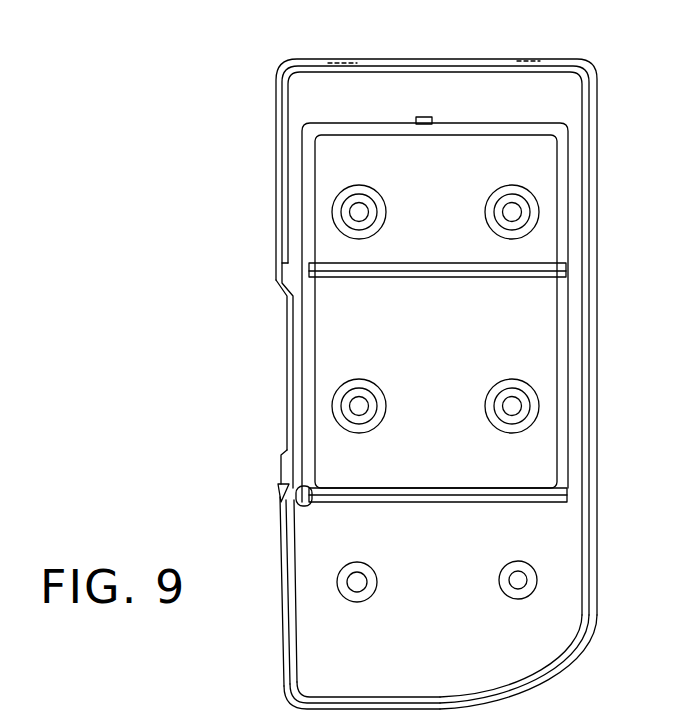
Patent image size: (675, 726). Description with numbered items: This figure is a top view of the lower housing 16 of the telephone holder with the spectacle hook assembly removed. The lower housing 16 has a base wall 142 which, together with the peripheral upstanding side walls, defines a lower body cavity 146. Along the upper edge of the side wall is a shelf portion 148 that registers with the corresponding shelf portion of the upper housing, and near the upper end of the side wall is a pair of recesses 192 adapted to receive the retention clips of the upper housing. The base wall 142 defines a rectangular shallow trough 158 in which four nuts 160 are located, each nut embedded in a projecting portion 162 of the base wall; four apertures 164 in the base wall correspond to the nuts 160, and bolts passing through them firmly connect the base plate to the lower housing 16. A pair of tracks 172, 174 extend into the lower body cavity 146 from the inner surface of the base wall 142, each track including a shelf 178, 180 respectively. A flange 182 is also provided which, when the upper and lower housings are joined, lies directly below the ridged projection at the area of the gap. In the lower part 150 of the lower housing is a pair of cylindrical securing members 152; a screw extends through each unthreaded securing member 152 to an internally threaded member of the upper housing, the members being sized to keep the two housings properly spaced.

The lower body 16 is at (272, 80).
The recesses 192 is at (353, 57).
The flange 182 is at (424, 117).
The rectangular shallow trough 158 is at (550, 156).
The shelf portion 148 is at (278, 182).
The nuts 160 is at (515, 210).
The projecting portion 162 is at (537, 220).
The apertures 164 is at (512, 405).
The track 172 is at (323, 265).
The shelf 178 is at (328, 280).
The shelf 180 is at (360, 487).
The track 174 is at (281, 487).
The base wall 142 is at (313, 542).
The lower part 150 is at (313, 665).
The lower body cavity 146 is at (562, 646).
The cylindrical securing members 152 is at (368, 600).